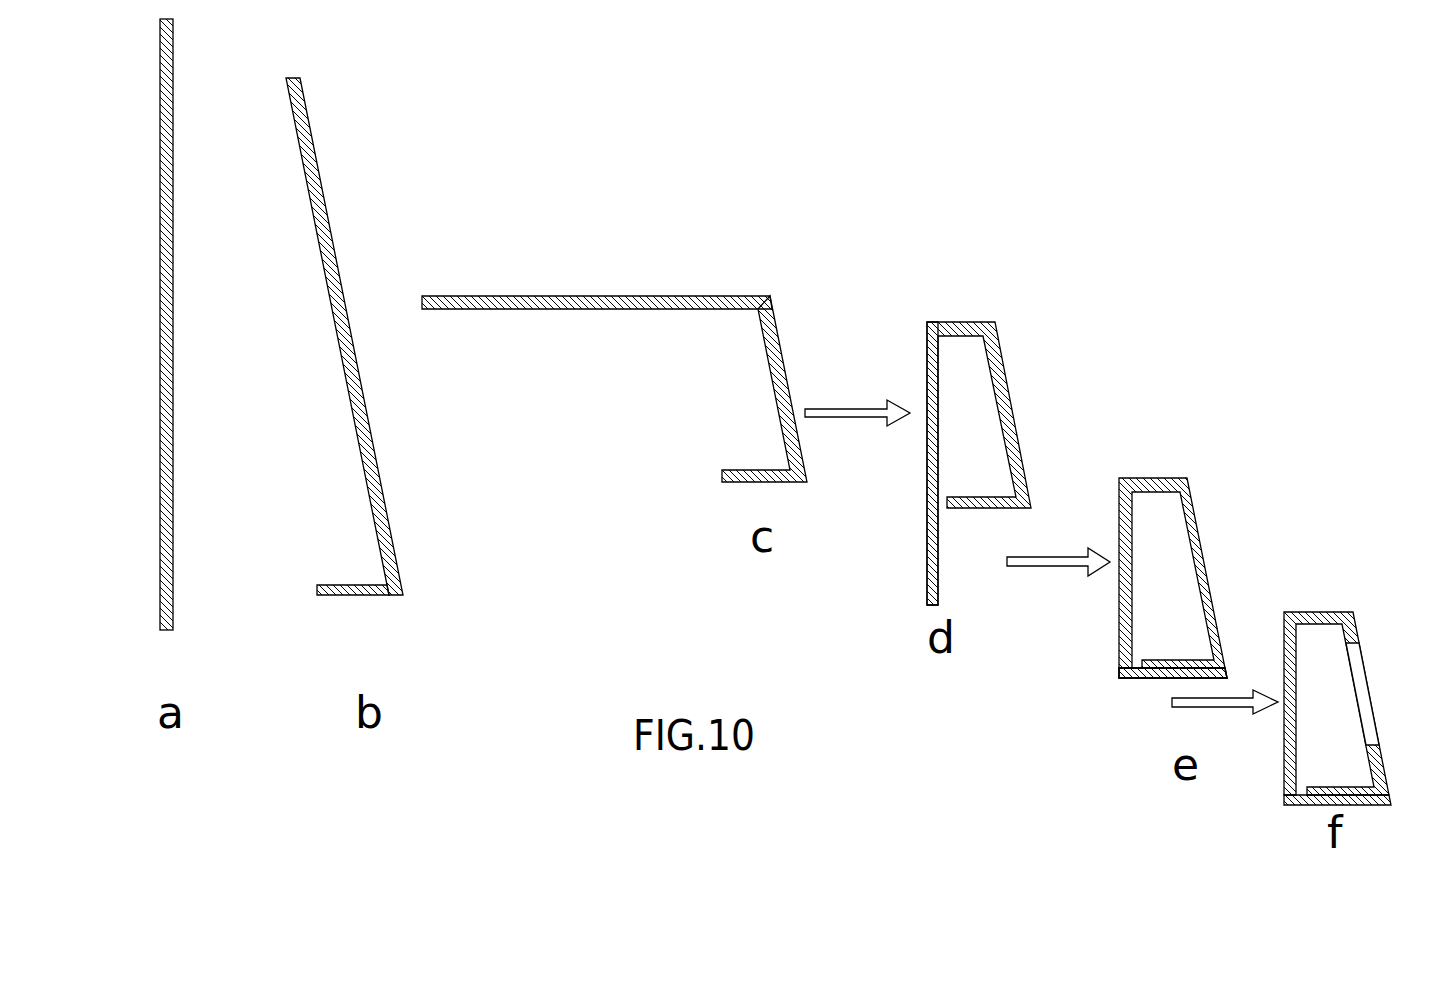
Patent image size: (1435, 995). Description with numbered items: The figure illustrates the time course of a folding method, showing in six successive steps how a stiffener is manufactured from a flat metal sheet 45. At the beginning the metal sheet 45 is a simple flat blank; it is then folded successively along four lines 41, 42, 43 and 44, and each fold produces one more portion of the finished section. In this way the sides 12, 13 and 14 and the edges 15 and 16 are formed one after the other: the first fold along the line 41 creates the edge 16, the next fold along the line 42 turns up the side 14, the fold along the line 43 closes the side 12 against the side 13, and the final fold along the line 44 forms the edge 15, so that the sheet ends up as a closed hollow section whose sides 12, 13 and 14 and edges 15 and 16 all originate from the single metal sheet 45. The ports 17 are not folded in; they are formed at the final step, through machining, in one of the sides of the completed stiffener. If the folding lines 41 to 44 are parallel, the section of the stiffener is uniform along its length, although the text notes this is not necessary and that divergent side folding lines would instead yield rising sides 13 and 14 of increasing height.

The side 12 is at (965, 337).
The side 13 is at (1119, 480).
The side 14 is at (775, 393).
The edge 15 is at (1150, 680).
The edge 16 is at (362, 597).
The port 17 is at (1365, 688).
The folding line 41 is at (403, 597).
The folding line 42 is at (770, 296).
The folding line 43 is at (927, 322).
The folding line 44 is at (1119, 678).
The metal sheet 45 is at (173, 590).